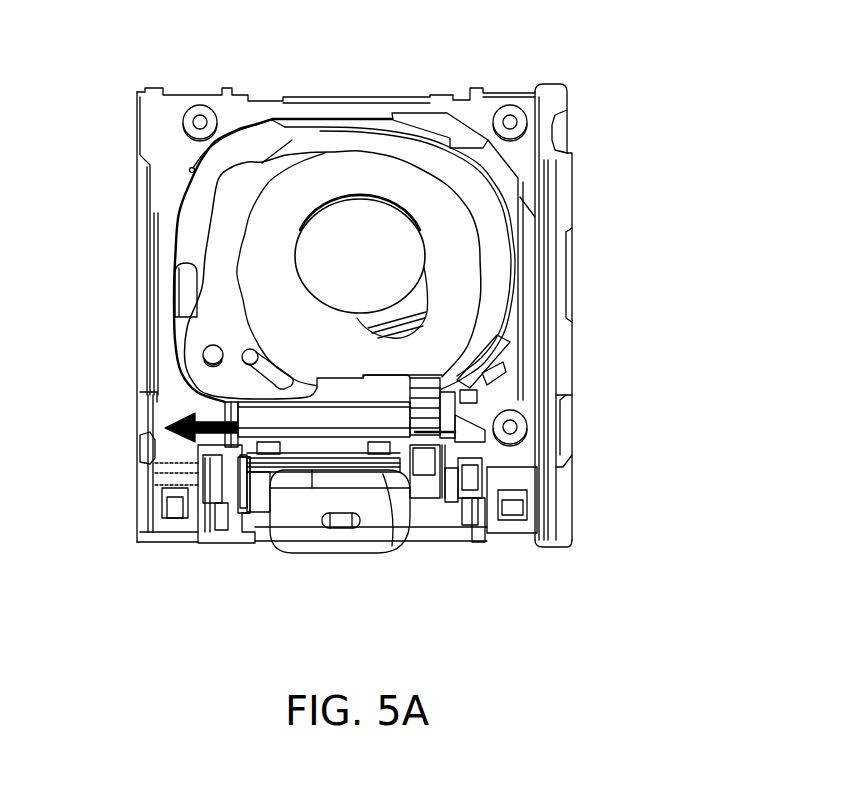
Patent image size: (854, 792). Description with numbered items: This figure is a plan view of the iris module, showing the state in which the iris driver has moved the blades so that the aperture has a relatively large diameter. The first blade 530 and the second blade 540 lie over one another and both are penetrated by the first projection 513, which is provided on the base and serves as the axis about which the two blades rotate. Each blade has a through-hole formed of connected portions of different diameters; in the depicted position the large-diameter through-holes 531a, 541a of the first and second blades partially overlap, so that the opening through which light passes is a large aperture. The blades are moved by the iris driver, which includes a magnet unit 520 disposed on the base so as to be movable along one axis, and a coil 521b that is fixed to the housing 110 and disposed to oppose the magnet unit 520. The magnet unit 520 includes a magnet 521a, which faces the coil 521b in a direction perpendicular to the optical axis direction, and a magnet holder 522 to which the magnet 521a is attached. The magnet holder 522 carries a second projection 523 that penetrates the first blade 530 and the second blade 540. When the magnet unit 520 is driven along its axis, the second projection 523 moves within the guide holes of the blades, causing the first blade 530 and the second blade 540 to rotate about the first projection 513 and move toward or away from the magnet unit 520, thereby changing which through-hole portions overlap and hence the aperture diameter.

The housing 110 is at (555, 503).
The first blade 530 is at (228, 240).
The second blade 540 is at (372, 170).
The through-hole having a relatively large diameter 531a is at (519, 266).
The through-hole having a relatively large diameter 541a is at (383, 264).
The second projection 523 is at (248, 350).
The first projection 513 is at (203, 356).
The magnet unit 520 is at (195, 485).
The magnet 521a is at (381, 470).
The coil 521b is at (305, 553).
The magnet holder 522 is at (400, 442).